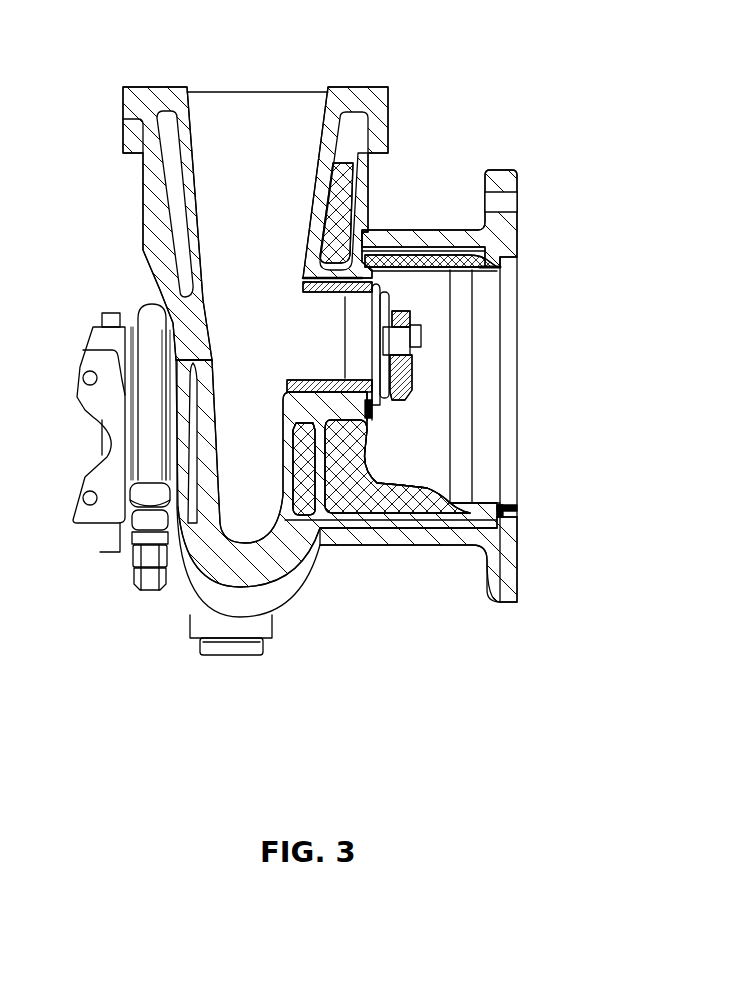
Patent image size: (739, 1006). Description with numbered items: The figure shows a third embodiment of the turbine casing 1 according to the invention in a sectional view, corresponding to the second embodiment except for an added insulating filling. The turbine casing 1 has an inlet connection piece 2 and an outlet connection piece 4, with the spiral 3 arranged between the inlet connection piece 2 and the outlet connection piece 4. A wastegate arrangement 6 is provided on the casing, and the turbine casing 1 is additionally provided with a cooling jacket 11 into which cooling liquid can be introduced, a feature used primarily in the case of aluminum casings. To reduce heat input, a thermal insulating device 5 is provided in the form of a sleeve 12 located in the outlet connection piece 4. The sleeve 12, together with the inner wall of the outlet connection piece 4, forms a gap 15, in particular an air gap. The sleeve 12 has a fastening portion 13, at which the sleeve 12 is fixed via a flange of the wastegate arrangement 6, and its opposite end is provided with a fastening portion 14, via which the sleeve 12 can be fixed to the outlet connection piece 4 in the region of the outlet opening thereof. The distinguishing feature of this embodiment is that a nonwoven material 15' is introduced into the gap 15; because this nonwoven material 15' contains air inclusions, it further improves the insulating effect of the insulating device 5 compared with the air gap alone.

The turbine casing 1 is at (531, 94).
The inlet connection piece 2 is at (393, 98).
The spiral 3 is at (243, 453).
The outlet connection piece 4 is at (463, 549).
The insulating device 5 is at (500, 303).
The wastegate arrangement 6 is at (387, 390).
The cooling jacket 11 is at (170, 213).
The sleeve 12 is at (433, 267).
The fastening portion 13 is at (362, 260).
The fastening portion 14 is at (500, 505).
The gap 15 is at (397, 532).
The nonwoven material 15' is at (335, 533).